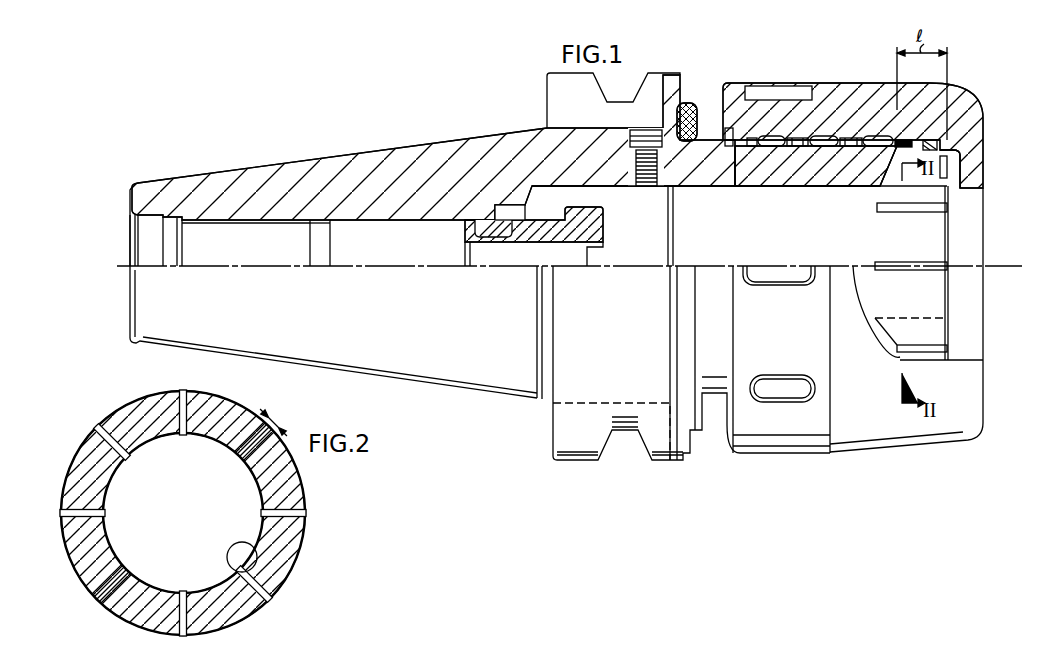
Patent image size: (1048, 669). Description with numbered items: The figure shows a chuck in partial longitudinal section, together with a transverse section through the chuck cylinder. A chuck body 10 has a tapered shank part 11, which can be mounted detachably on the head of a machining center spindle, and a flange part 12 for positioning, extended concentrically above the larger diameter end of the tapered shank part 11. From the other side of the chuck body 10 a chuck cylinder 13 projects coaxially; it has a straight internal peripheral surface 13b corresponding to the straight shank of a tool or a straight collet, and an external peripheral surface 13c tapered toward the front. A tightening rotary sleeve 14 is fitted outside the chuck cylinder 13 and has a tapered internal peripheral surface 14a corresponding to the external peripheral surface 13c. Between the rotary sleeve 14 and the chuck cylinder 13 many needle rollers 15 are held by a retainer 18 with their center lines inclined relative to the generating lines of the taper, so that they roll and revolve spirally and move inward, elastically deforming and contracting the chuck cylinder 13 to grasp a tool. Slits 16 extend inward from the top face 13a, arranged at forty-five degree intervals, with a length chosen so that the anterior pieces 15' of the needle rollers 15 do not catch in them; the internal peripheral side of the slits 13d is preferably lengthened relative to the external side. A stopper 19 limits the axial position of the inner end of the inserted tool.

In FIG. 1, the chuck body 10 is at (670, 73).
In FIG. 1, the tapered shank part 11 is at (468, 148).
In FIG. 1, the flange part 12 is at (580, 463).
In FIG. 1, the chuck cylinder 13 is at (773, 153).
In FIG. 2, the chuck cylinder 13 is at (290, 553).
In FIG. 1, the top face 13a is at (947, 173).
In FIG. 1, the straight internal peripheral surface 13b is at (743, 187).
In FIG. 2, the straight internal peripheral surface 13b is at (257, 570).
In FIG. 1, the external peripheral surface 13c is at (903, 140).
In FIG. 2, the external peripheral surface 13c is at (307, 530).
In FIG. 1, the internal peripheral side of the slits 13d is at (900, 160).
In FIG. 1, the tightening rotary sleeve 14 is at (877, 97).
In FIG. 1, the tapered internal peripheral surface 14a is at (953, 141).
In FIG. 1, the needle rollers 15 is at (821, 99).
In FIG. 1, the anterior pieces of the needle rollers 15' is at (959, 109).
In FIG. 1, the slits 16 is at (912, 178).
In FIG. 2, the slits 16 is at (247, 443).
In FIG. 1, the retainer 18 is at (800, 140).
In FIG. 1, the stopper 19 is at (596, 223).